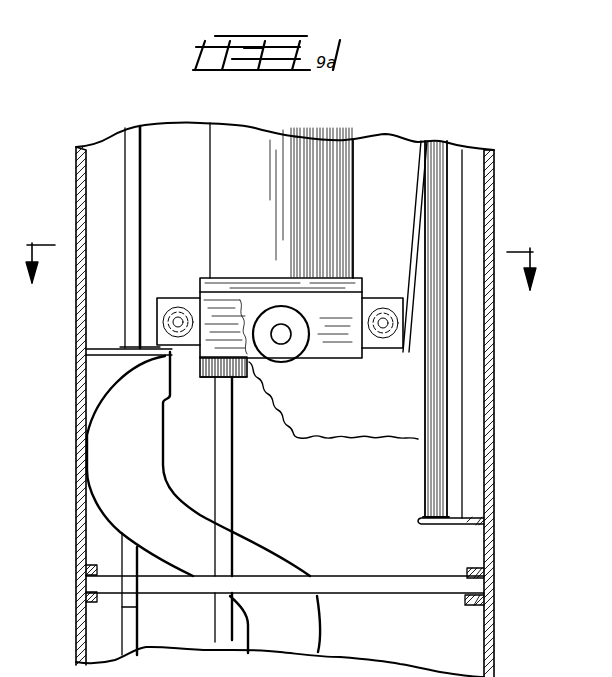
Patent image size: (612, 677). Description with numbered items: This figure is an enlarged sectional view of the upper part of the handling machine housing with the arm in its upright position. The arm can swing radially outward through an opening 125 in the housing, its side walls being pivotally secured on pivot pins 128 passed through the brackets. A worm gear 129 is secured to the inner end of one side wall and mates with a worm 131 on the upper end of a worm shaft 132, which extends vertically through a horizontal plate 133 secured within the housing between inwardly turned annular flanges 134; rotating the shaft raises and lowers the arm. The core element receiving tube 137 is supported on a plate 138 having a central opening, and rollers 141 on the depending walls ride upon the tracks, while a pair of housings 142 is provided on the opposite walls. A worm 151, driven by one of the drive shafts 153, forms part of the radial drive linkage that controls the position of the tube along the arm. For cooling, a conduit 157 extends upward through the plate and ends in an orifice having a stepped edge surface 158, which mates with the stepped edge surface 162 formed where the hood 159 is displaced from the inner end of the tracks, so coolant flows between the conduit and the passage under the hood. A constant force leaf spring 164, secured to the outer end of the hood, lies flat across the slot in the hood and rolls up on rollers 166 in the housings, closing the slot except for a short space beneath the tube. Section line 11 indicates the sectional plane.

The section line 11 is at (281, 281).
The opening 125 is at (493, 503).
The pivot pins 128 is at (360, 304).
The worm gear 129 is at (331, 407).
The worm 131 is at (247, 378).
The worm shaft 132 is at (220, 462).
The horizontal plate 133 is at (355, 584).
The annular flanges 134 is at (467, 570).
The core element receiving tube 137 is at (211, 173).
The plate 138 is at (206, 289).
The rollers 141 is at (287, 352).
The housings 142 is at (197, 362).
The worm 151 is at (133, 317).
The drive shafts 153 is at (132, 623).
The conduit 157 is at (313, 637).
The stepped edge surface 158 is at (170, 400).
The hood 159 is at (428, 373).
The stepped edge surface 162 is at (420, 521).
The constant force leaf spring 164 is at (414, 247).
The rollers 166 is at (170, 310).